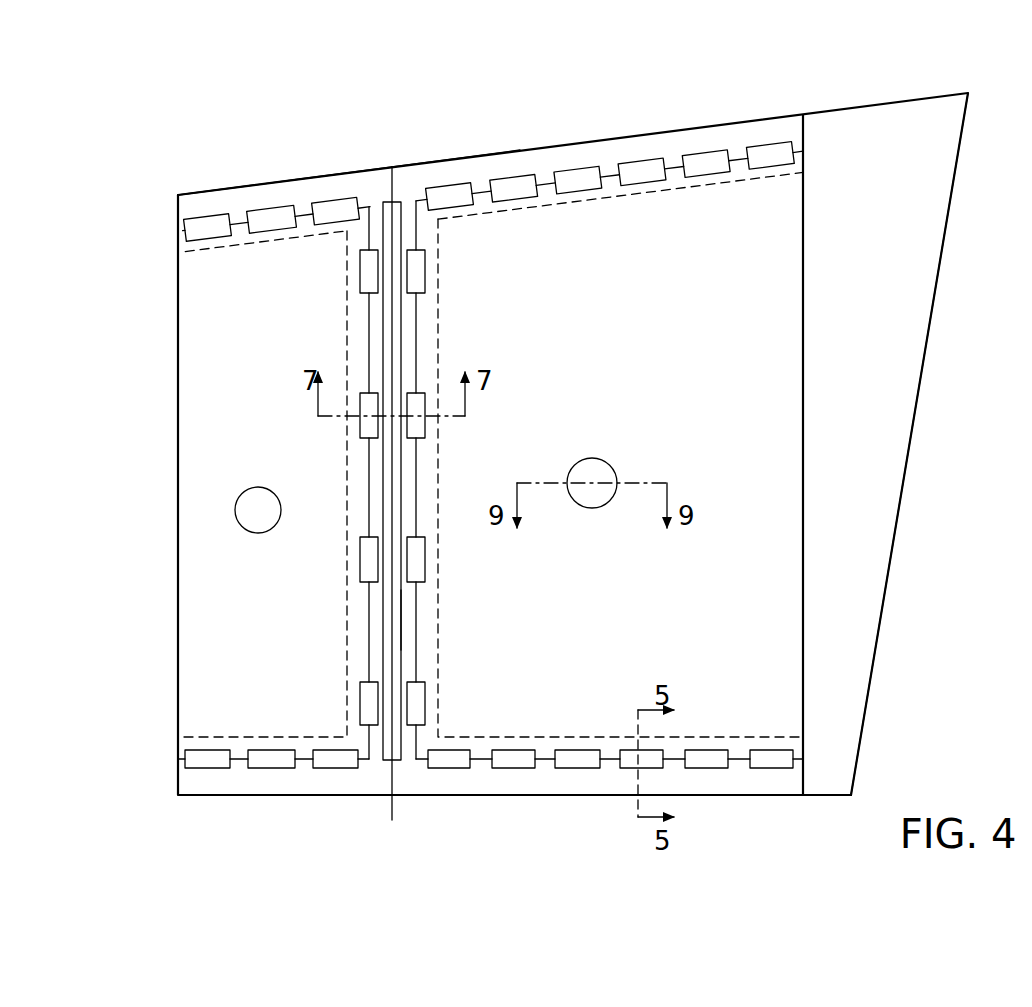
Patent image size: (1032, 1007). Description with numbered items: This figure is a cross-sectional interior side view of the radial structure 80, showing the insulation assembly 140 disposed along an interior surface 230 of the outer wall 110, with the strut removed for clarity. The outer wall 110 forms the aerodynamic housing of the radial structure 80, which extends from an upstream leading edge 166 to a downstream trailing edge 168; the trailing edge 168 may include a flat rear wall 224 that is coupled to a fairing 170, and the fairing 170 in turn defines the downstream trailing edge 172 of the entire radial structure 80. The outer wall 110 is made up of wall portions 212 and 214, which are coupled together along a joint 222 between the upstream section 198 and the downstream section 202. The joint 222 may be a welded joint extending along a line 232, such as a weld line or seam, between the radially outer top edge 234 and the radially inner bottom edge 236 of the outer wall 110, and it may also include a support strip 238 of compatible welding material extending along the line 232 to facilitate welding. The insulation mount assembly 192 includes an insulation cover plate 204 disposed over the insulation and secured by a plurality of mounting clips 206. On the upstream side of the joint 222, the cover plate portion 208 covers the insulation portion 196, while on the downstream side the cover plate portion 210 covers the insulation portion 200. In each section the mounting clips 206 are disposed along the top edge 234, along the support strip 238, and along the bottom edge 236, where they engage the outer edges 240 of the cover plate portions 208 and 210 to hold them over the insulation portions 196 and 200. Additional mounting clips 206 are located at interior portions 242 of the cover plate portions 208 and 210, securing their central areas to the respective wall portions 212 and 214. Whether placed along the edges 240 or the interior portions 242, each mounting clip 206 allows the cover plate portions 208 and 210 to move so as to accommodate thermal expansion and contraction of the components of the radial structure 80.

The radial structure 80 is at (912, 73).
The outer wall 110 is at (173, 188).
The insulation assembly 140 is at (521, 80).
The leading edge 166 is at (178, 370).
The trailing edge 168 is at (805, 360).
The fairing 170 is at (938, 93).
The trailing edge 172 is at (938, 290).
The insulation mount assembly 192 is at (197, 263).
The insulation portion 196 is at (245, 733).
The upstream section 198 is at (297, 157).
The insulation portion 200 is at (712, 190).
The downstream section 202 is at (785, 75).
The insulation cover plate 204 is at (782, 240).
The mounting clips 206 is at (200, 215).
The cover plate portion 208 is at (198, 317).
The cover plate portion 210 is at (790, 203).
The wall portion 212 is at (228, 188).
The wall portion 214 is at (460, 158).
The joint 222 is at (392, 168).
The flat rear wall 224 is at (805, 295).
The interior surface 230 is at (790, 123).
The line 232 is at (393, 186).
The top edge 234 is at (362, 168).
The bottom edge 236 is at (513, 795).
The support strip 238 is at (402, 618).
The outer edges 240 is at (240, 225).
The interior portions 242 is at (197, 415).